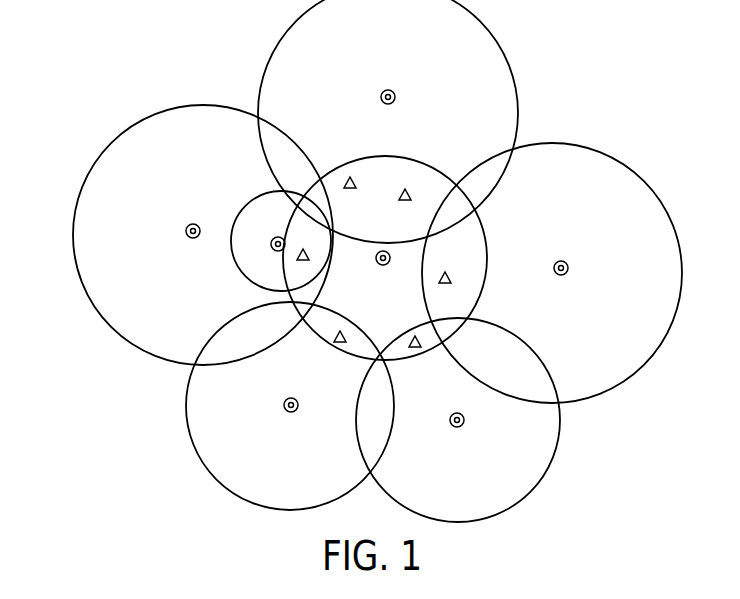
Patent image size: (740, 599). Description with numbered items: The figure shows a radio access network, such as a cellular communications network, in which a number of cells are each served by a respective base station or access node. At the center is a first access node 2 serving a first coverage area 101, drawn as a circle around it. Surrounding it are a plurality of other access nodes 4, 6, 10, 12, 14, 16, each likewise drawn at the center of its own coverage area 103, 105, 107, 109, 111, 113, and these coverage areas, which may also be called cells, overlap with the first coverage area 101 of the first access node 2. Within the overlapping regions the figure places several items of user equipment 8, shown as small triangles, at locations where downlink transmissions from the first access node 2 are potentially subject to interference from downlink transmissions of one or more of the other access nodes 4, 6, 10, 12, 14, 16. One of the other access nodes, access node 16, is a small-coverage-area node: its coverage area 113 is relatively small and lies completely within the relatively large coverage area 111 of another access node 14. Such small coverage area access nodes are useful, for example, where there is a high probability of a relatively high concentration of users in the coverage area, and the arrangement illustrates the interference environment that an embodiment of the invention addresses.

The first access node 2 is at (386, 251).
The access node 4 is at (462, 412).
The access node 6 is at (296, 396).
The user equipment 8 is at (360, 183).
The access node 10 is at (568, 265).
The access node 12 is at (396, 99).
The access node 14 is at (188, 238).
The access node 16 is at (272, 238).
The first coverage area 101 is at (464, 188).
The coverage area 103 is at (562, 413).
The coverage area 105 is at (185, 406).
The coverage area 107 is at (618, 157).
The coverage area 109 is at (497, 38).
The coverage area 111 is at (108, 147).
The coverage area 113 is at (245, 202).